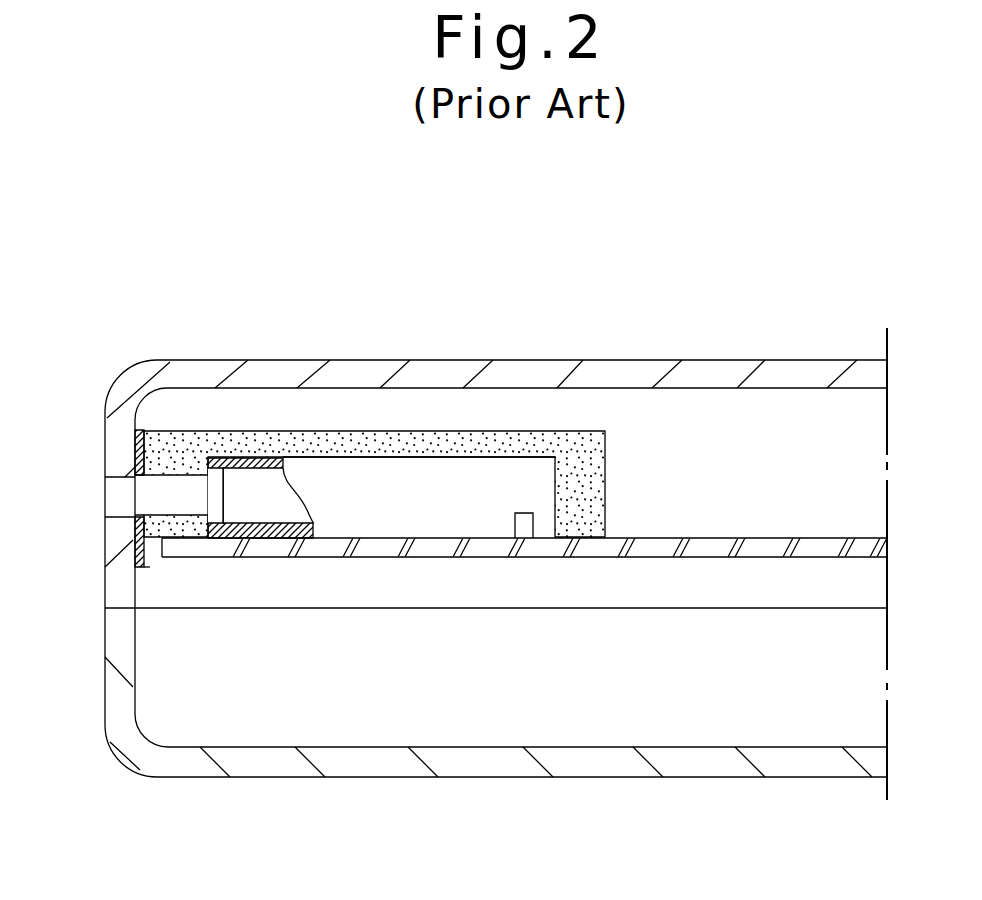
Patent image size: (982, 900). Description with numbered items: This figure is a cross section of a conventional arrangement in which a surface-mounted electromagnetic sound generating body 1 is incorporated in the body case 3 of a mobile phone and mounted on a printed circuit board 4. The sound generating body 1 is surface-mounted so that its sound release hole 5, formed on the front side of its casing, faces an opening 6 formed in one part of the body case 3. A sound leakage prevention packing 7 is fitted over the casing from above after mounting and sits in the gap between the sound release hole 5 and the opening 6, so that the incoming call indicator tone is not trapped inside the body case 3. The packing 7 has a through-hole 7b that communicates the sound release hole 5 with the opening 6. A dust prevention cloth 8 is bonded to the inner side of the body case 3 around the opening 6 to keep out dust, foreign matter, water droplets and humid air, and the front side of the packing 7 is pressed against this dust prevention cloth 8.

The surface-mounted electromagnetic sound generating body 1 is at (397, 457).
The body case 3 is at (710, 360).
The printed circuit board 4 is at (752, 540).
The sound release hole 5 is at (217, 497).
The opening 6 is at (110, 503).
The sound leakage prevention packing 7 is at (510, 437).
The through-hole 7b is at (180, 490).
The dust prevention cloth 8 is at (133, 447).